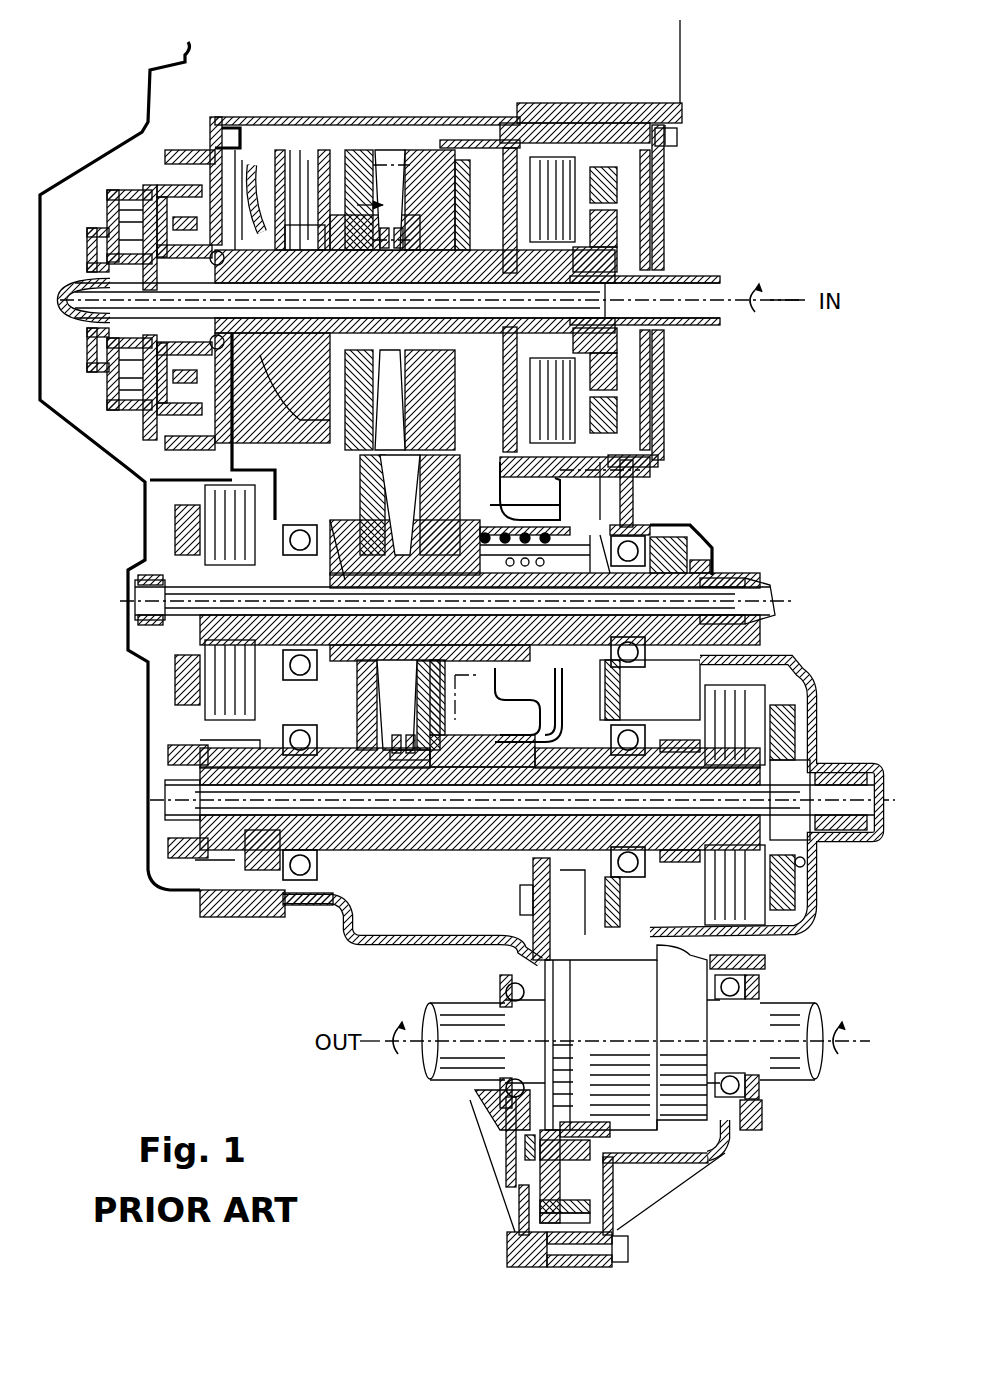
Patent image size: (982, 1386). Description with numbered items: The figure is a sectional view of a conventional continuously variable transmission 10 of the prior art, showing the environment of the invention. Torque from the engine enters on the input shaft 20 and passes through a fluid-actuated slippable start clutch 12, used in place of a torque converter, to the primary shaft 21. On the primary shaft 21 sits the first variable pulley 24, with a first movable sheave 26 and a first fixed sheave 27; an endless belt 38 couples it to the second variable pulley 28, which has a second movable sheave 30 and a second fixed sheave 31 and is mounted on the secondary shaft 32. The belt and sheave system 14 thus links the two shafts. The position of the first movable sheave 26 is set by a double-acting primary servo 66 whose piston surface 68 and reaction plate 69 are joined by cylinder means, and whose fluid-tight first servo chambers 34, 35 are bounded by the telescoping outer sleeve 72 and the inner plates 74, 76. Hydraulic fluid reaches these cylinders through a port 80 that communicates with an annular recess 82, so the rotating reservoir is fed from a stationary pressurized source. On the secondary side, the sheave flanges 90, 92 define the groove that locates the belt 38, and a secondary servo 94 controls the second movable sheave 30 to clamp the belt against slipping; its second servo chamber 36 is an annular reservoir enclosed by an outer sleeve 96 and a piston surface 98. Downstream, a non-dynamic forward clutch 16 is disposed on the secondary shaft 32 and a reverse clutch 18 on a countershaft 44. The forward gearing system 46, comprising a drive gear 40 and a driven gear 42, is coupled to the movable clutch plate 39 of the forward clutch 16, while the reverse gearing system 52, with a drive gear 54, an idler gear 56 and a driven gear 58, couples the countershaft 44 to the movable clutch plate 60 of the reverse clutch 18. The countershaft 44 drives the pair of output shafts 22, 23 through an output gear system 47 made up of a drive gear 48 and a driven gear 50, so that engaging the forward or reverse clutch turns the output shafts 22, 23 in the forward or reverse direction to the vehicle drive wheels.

The continuously variable transmission 10 is at (705, 78).
The start clutch 12 is at (660, 157).
The belt and sheave system 14 is at (430, 180).
The forward clutch 16 is at (162, 670).
The reverse clutch 18 is at (722, 660).
The input shaft 20 is at (690, 288).
The primary shaft 21 is at (165, 258).
The output shaft 22 is at (790, 1000).
The output shaft 23 is at (462, 1078).
The first variable pulley 24 is at (400, 225).
The first movable sheave 26 is at (232, 460).
The first fixed sheave 27 is at (455, 160).
The second variable pulley 28 is at (210, 890).
The second movable sheave 30 is at (440, 750).
The second fixed sheave 31 is at (380, 512).
The secondary shaft 32 is at (718, 575).
The first servo chamber 34 is at (283, 143).
The first servo chamber 35 is at (330, 130).
The second servo chamber 36 is at (583, 492).
The endless belt 38 is at (425, 175).
The movable clutch plate 39 is at (200, 560).
The drive gear 40 is at (217, 483).
The driven gear 42 is at (240, 738).
The countershaft 44 is at (812, 745).
The forward gearing system 46 is at (318, 942).
The output gear system 47 is at (497, 893).
The drive gear 48 is at (522, 862).
The driven gear 50 is at (535, 1190).
The reverse gearing system 52 is at (740, 655).
The drive gear 54 is at (672, 530).
The idler gear 56 is at (800, 690).
The driven gear 58 is at (805, 865).
The movable clutch plate 60 is at (795, 720).
The primary servo 66 is at (285, 165).
The piston surface 68 is at (325, 180).
The reaction plate 69 is at (290, 133).
The telescoping outer sleeve 72 is at (240, 150).
The inner plate 74 is at (335, 425).
The inner plate 76 is at (232, 430).
The port 80 is at (304, 227).
The annular recess 82 is at (90, 292).
The sheave flange 90 is at (445, 706).
The sheave flange 92 is at (410, 760).
The secondary servo 94 is at (640, 462).
The outer sleeve 96 is at (428, 512).
The piston surface 98 is at (618, 516).